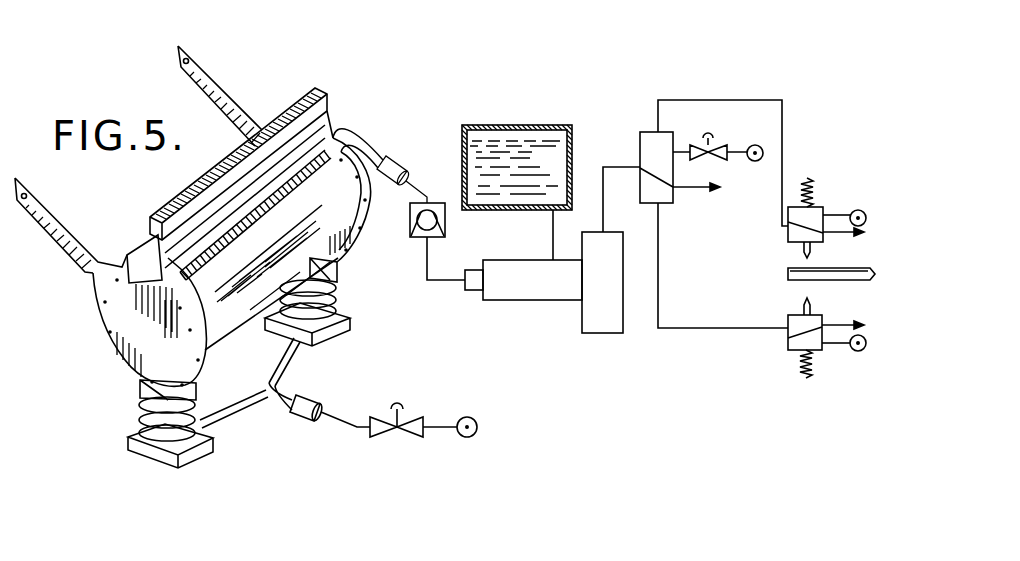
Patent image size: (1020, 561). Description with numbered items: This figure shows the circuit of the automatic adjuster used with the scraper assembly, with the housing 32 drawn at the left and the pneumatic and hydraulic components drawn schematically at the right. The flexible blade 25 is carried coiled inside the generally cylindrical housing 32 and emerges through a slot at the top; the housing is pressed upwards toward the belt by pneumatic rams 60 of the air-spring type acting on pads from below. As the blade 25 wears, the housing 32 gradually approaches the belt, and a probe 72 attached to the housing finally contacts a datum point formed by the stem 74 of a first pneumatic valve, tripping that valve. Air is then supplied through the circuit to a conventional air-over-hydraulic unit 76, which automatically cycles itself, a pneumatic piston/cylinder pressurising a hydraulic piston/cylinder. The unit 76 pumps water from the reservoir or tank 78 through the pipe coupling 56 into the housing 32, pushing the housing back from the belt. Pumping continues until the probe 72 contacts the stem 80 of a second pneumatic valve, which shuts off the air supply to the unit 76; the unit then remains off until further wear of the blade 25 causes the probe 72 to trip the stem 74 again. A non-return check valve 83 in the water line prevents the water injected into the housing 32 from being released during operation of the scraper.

The blade 25 is at (307, 97).
The housing 32 is at (322, 182).
The pipe coupling 56 is at (390, 160).
The pneumatic rams 60 is at (335, 280).
The non-return check valve 83 is at (432, 200).
The reservoir or tank 78 is at (533, 142).
The air-over-hydraulic unit 76 is at (575, 305).
The stem of pneumatic valve 74 is at (795, 248).
The probe 72 is at (788, 273).
The stem of second pneumatic valve 80 is at (802, 305).